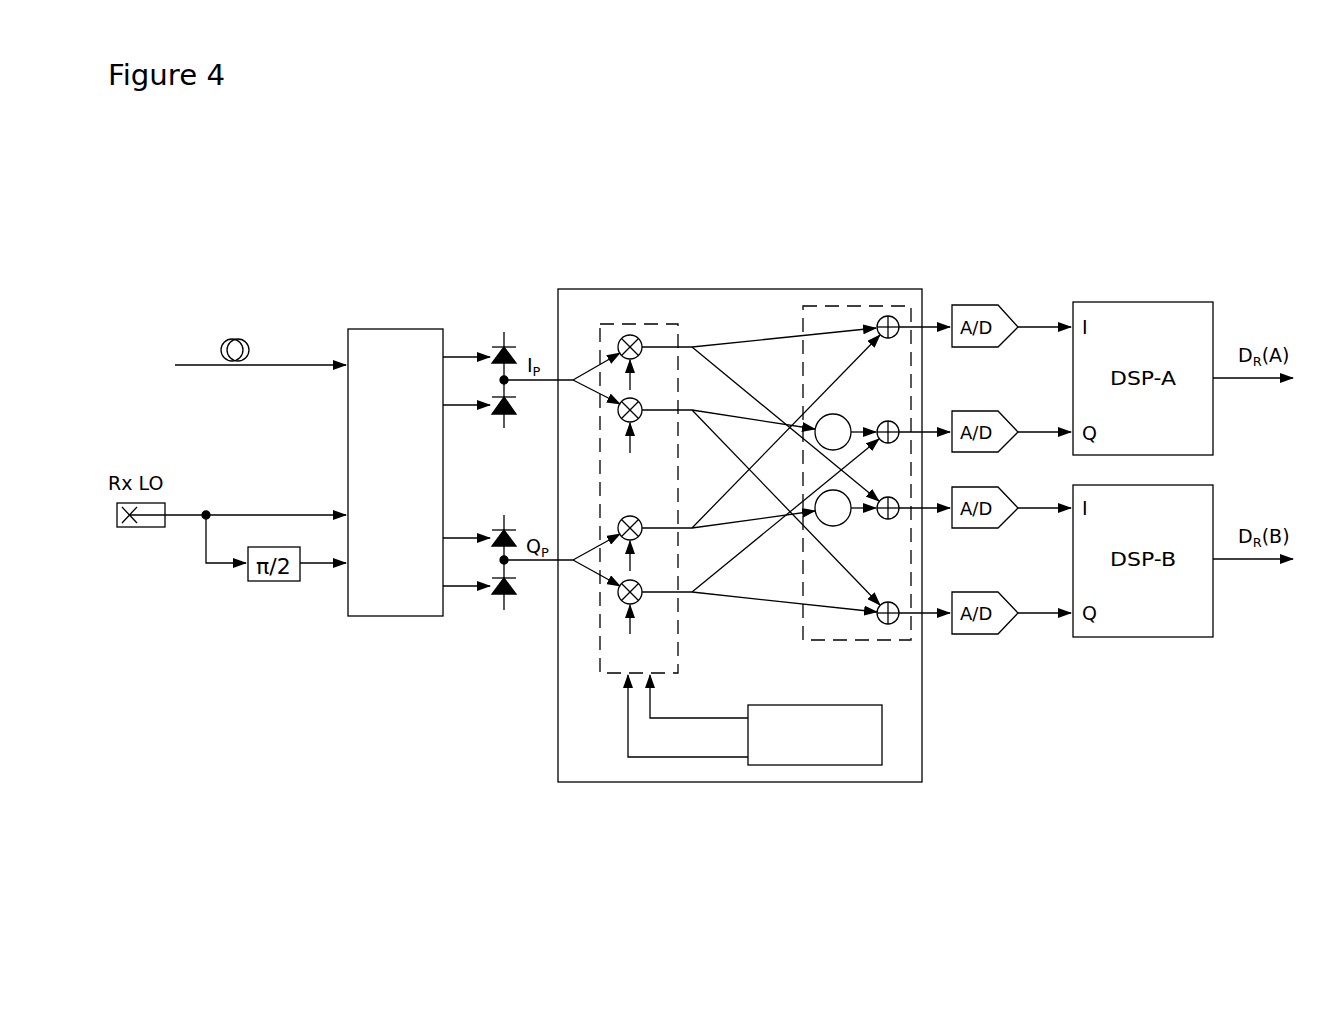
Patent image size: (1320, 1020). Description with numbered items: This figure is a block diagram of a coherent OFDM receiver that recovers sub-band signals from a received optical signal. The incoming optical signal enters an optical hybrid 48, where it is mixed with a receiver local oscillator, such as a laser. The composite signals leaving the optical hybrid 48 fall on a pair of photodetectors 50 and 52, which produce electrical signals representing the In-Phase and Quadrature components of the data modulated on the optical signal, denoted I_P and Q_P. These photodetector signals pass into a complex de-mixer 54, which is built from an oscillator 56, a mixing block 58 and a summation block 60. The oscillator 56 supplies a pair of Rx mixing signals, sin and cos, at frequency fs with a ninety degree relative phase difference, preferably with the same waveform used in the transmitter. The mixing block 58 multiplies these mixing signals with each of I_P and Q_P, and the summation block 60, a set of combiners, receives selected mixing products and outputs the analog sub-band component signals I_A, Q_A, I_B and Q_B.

The optical hybrid 48 is at (372, 329).
The photodetector 50 is at (508, 347).
The photodetector 52 is at (508, 530).
The complex de-mixer 54 is at (808, 289).
The oscillator 56 is at (833, 705).
The mixing block 58 is at (678, 655).
The summation block 60 is at (800, 322).